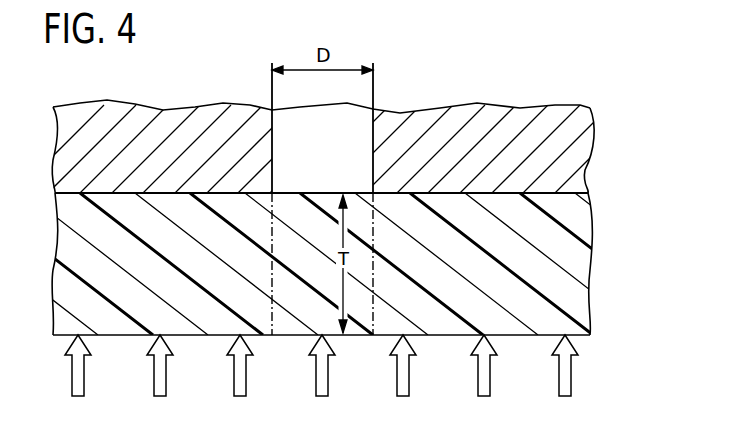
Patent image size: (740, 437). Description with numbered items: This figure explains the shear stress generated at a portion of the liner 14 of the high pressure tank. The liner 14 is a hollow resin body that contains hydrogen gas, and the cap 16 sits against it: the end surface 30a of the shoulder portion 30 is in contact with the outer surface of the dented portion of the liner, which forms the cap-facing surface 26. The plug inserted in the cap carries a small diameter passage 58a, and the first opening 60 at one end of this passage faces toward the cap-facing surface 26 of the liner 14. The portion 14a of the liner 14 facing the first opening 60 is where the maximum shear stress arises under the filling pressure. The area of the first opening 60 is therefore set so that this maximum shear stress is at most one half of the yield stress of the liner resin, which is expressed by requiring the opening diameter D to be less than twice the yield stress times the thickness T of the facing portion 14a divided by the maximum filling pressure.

The cap 16 is at (345, 146).
The shoulder portion 30 is at (578, 149).
The liner 14 is at (578, 262).
The portion of the liner facing toward the first opening 14a is at (357, 298).
The end surface of the shoulder portion 30a is at (565, 194).
The cap-facing surface 26 is at (448, 193).
The small diameter passage 58a is at (372, 139).
The first opening 60 is at (292, 196).